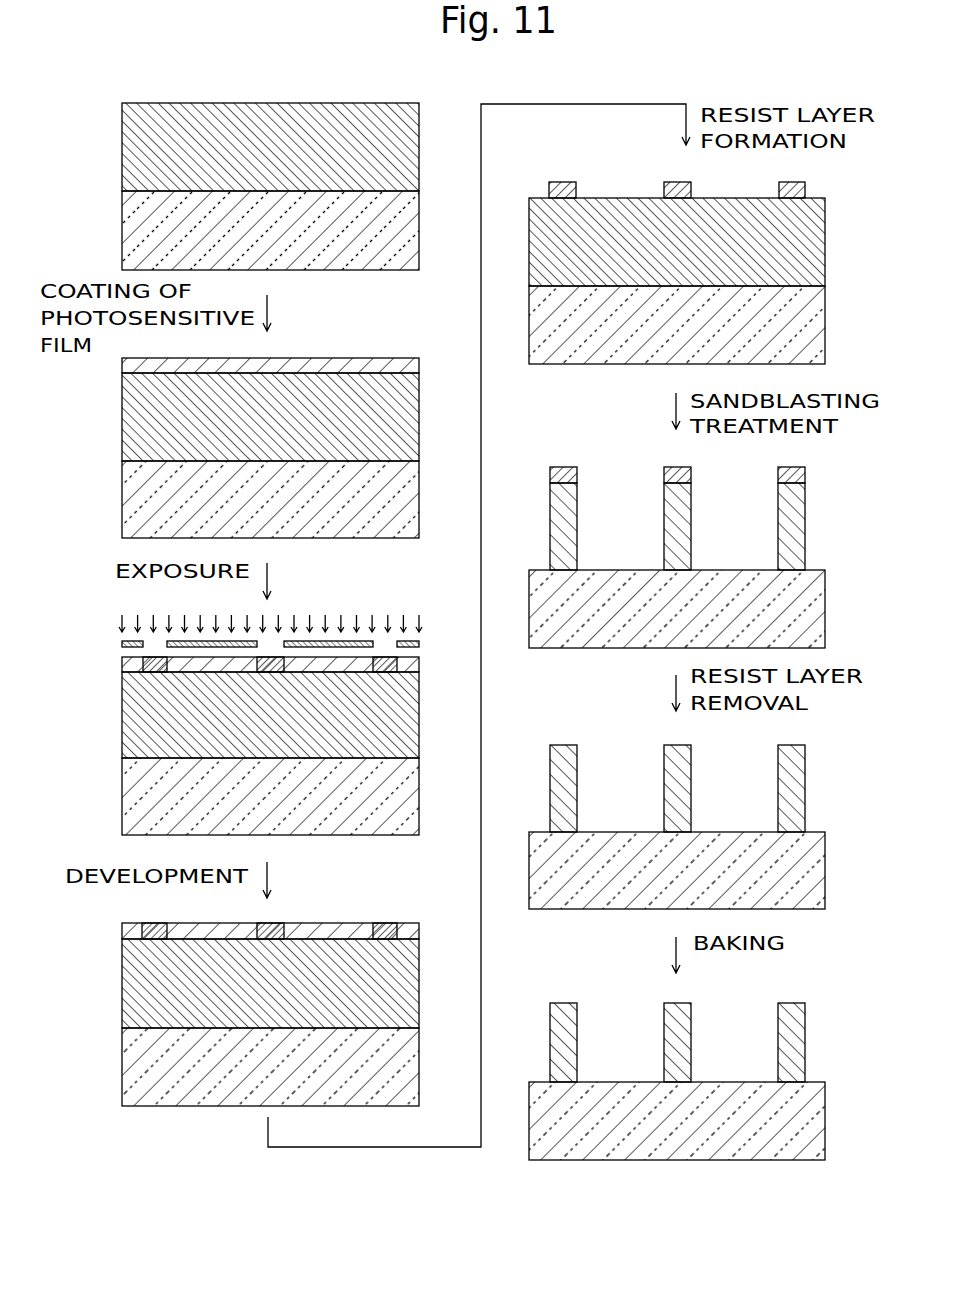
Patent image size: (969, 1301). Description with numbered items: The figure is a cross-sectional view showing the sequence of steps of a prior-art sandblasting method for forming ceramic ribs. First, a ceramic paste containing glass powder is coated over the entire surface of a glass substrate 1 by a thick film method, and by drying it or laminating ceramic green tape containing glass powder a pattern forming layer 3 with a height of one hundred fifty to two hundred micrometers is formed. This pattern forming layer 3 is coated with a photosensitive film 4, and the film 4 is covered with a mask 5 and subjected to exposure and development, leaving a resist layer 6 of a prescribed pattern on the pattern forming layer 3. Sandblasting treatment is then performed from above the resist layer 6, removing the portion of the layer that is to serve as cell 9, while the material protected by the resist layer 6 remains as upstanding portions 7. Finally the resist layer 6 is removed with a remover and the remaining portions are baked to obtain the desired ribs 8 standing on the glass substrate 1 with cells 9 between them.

The glass substrate 1 is at (498, 675).
The pattern forming layer 3 is at (498, 565).
The photosensitive film 4 is at (293, 650).
The mask 5 is at (420, 645).
The resist layer 6 is at (563, 178).
The patterned layer portions (ribs) 7 is at (692, 657).
The ribs 8 is at (693, 1040).
The cell 9 is at (742, 1053).